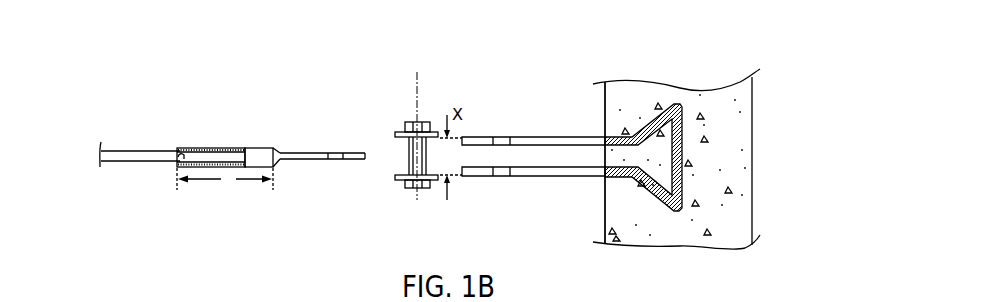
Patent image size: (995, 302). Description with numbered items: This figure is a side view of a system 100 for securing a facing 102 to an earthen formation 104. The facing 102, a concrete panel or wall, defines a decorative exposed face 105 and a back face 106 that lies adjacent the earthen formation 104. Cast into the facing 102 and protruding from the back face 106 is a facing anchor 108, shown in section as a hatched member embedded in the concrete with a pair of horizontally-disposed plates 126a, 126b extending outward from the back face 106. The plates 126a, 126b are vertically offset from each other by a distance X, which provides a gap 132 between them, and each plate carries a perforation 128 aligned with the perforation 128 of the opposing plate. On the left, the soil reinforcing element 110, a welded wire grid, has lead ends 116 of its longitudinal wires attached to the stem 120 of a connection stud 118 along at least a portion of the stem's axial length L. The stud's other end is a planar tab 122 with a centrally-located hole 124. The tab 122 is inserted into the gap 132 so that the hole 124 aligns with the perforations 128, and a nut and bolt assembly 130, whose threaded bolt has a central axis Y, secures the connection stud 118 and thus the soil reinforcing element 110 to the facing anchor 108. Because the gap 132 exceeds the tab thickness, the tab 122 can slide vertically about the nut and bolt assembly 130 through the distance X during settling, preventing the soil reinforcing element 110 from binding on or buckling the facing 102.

The system 100 is at (362, 79).
The facing 102 is at (710, 236).
The earthen formation 104 is at (142, 108).
The exposed face 105 is at (752, 147).
The back face 106 is at (603, 93).
The facing anchor 108 is at (682, 138).
The soil reinforcing element 110 is at (112, 158).
The lead ends 116 is at (180, 160).
The connection stud 118 is at (260, 148).
The stem 120 is at (227, 148).
The tab 122 is at (349, 150).
The hole 124 is at (334, 160).
The plate 126a is at (570, 137).
The plate 126b is at (567, 176).
The perforation 128 is at (505, 137).
The nut and bolt assembly 130 is at (418, 122).
The gap 132 is at (469, 160).